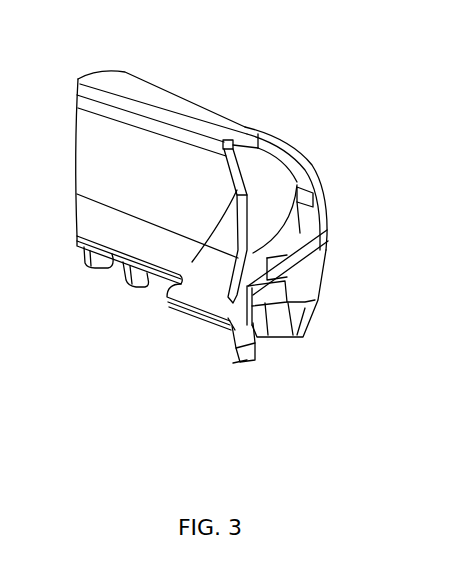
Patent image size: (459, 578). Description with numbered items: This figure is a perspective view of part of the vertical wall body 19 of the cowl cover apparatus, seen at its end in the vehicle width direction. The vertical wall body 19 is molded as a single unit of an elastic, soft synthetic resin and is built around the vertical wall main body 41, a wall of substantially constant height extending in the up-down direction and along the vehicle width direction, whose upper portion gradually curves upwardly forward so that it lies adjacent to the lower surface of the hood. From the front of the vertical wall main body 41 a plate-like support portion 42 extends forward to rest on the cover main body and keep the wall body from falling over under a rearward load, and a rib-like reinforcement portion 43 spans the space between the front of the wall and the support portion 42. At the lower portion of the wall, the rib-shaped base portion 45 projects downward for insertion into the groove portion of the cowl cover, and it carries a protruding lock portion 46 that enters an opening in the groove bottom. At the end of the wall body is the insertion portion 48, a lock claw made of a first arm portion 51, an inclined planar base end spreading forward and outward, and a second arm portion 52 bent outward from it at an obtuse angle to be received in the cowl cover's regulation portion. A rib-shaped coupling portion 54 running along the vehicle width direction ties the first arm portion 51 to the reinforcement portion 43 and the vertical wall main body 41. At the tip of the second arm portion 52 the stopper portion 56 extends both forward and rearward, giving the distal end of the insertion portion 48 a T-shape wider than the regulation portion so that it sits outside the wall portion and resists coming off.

The vertical wall body 19 is at (212, 79).
The vertical wall main body 41 is at (302, 152).
The support portion 42 is at (87, 221).
The reinforcement portion 43 is at (248, 180).
The base portion 45 is at (108, 266).
The lock portion 46 is at (234, 363).
The insertion portion 48 is at (312, 274).
The first arm portion 51 is at (322, 242).
The second arm portion 52 is at (282, 281).
The coupling portion 54 is at (256, 243).
The stopper portion 56 is at (273, 302).